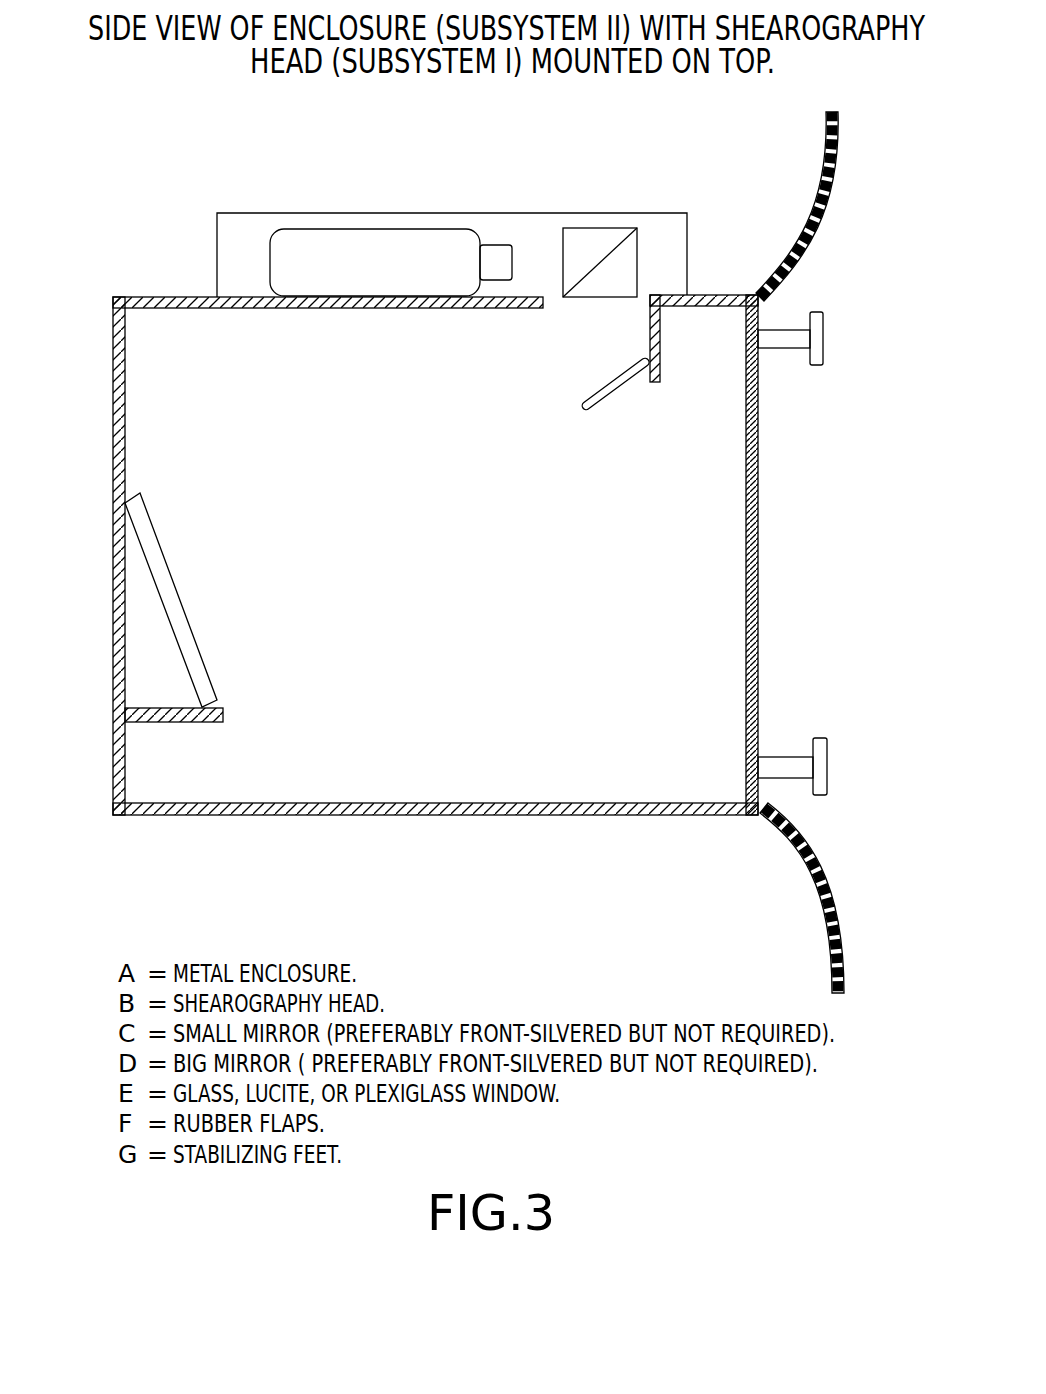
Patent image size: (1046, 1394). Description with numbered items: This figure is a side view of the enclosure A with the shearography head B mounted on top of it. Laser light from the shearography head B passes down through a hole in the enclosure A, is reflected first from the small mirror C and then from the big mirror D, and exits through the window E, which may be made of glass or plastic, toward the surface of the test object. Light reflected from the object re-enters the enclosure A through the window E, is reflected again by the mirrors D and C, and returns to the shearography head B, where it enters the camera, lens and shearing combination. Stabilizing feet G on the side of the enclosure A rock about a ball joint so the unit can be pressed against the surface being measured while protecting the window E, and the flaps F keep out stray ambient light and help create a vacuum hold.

The enclosure A is at (435, 580).
The shearography head B is at (452, 230).
The mirror C is at (630, 391).
The mirror D is at (171, 600).
The window E is at (781, 555).
The flaps F is at (811, 552).
The stabilizing feet G is at (811, 553).